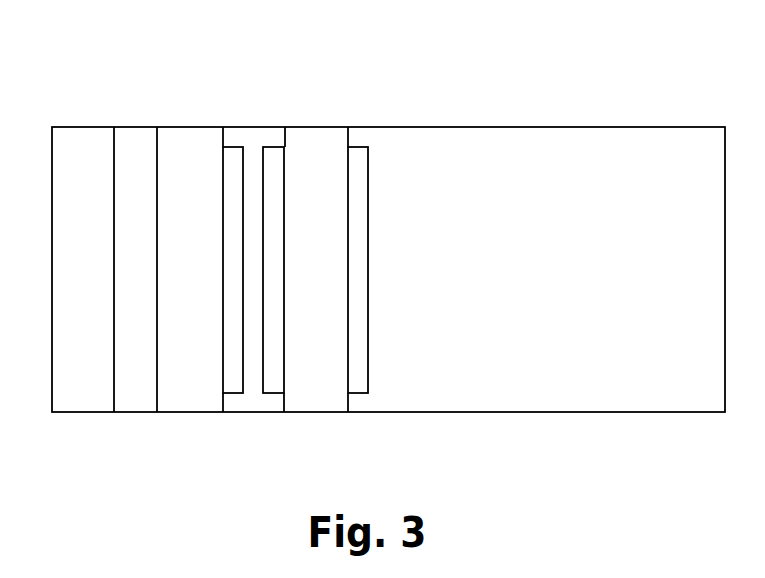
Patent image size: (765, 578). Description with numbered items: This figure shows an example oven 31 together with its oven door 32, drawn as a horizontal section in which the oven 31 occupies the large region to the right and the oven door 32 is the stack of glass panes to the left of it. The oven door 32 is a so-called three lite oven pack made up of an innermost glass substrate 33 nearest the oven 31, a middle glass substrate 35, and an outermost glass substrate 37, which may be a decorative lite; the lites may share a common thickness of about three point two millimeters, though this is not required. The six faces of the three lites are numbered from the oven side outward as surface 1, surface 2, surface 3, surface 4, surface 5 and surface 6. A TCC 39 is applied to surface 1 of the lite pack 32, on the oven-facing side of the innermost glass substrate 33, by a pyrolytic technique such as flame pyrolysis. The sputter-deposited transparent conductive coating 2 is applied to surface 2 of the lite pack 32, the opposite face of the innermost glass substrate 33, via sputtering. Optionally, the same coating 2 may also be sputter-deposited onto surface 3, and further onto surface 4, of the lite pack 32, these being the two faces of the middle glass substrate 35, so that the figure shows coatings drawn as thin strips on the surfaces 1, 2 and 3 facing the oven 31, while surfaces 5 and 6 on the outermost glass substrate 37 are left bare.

The oven door 32 is at (252, 40).
The oven 31 is at (534, 265).
The innermost glass substrate 33 is at (315, 127).
The middle glass substrate 35 is at (188, 127).
The outermost glass substrate 37 is at (82, 127).
The TCC 39 is at (355, 393).
The sputter-deposited transparent conductive coating 2 is at (233, 393).
The surface 1 is at (336, 163).
The surface 3 is at (209, 163).
The surface 4 is at (173, 163).
The surface 5 is at (101, 163).
The surface 6 is at (66, 163).